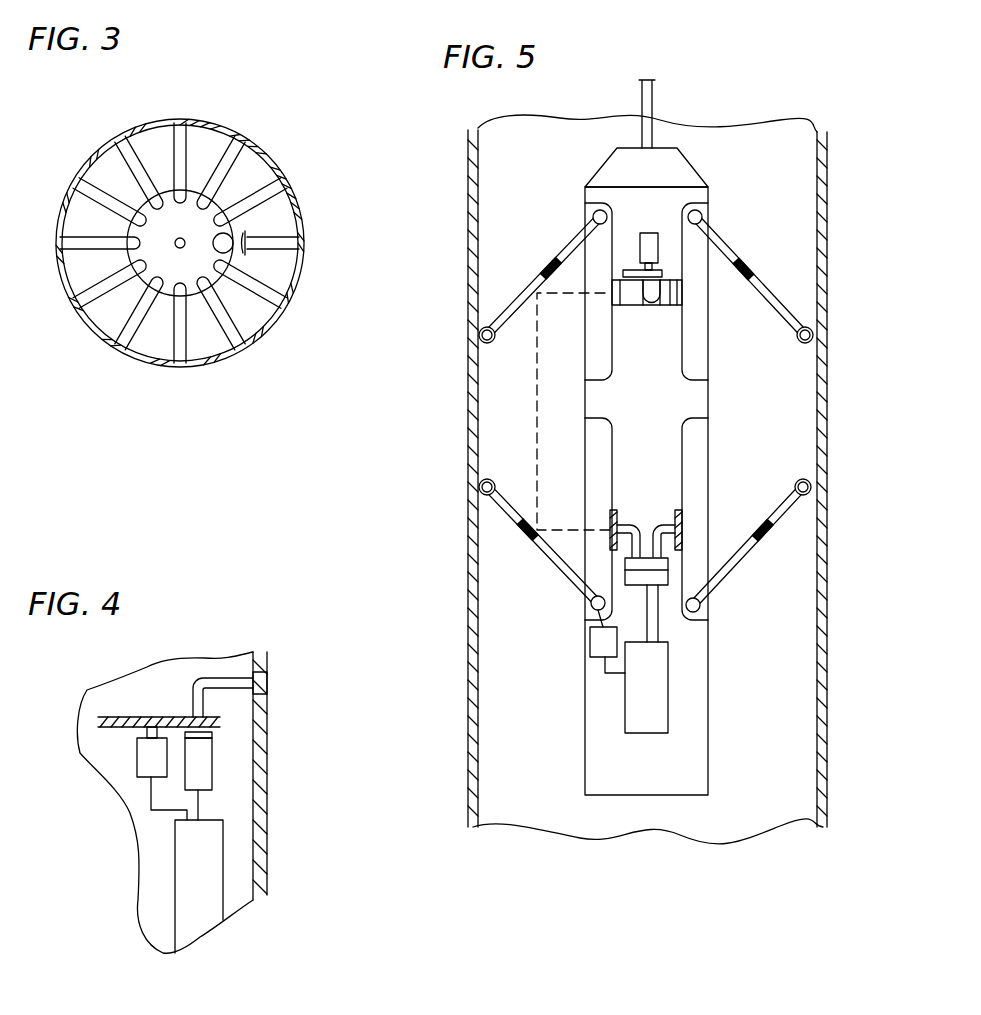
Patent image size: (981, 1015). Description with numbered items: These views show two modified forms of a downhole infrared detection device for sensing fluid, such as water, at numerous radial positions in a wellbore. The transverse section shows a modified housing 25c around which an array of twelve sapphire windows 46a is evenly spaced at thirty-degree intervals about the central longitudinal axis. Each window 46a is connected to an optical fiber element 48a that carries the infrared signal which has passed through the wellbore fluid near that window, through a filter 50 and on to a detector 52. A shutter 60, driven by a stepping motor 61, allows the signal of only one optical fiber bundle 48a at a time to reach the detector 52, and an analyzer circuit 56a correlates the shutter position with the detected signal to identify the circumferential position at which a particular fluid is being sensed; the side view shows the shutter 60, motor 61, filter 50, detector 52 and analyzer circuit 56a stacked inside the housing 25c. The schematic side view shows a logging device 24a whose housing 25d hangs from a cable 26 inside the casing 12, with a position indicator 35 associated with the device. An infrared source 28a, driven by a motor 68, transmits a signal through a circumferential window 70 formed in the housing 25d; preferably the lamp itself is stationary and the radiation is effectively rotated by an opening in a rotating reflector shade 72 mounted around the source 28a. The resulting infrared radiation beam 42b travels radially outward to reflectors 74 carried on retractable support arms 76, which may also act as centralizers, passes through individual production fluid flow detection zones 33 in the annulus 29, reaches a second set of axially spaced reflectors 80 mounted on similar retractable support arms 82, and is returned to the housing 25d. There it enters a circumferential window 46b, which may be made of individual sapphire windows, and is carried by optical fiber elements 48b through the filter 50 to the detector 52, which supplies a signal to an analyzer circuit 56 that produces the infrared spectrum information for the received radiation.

In FIG. 5, the casing 12 is at (823, 588).
In FIG. 5, the logging device 24a is at (706, 161).
In FIG. 3, the modified housing 25c is at (270, 153).
In FIG. 4, the modified housing 25c is at (267, 712).
In FIG. 5, the housing 25d is at (708, 218).
In FIG. 5, the wireline cable 26 is at (653, 108).
In FIG. 5, the infrared source 28a is at (643, 307).
In FIG. 5, the annulus 29 is at (538, 808).
In FIG. 5, the detection zones 33 is at (505, 418).
In FIG. 5, the position indicator 35 is at (597, 640).
In FIG. 5, the infrared radiation beam 42b is at (537, 370).
In FIG. 3, the sapphire windows 46a is at (180, 120).
In FIG. 4, the sapphire windows 46a is at (267, 680).
In FIG. 5, the circumferential window 46b is at (607, 513).
In FIG. 3, the optical fiber element 48a is at (173, 160).
In FIG. 4, the optical fiber element 48a is at (220, 680).
In FIG. 5, the optical fiber elements 48b is at (652, 530).
In FIG. 4, the filter 50 is at (212, 735).
In FIG. 5, the filter 50 is at (670, 565).
In FIG. 4, the detector 52 is at (212, 765).
In FIG. 5, the detector 52 is at (658, 590).
In FIG. 5, the analyzer circuit 56 is at (645, 733).
In FIG. 4, the analyzer circuit 56a is at (177, 902).
In FIG. 3, the shutter 60 is at (92, 328).
In FIG. 4, the shutter 60 is at (143, 715).
In FIG. 4, the stepping motor 61 is at (137, 758).
In FIG. 5, the motor 68 is at (650, 238).
In FIG. 5, the circumferential window 70 is at (683, 290).
In FIG. 5, the reflector shade 72 is at (690, 317).
In FIG. 5, the reflectors 74 is at (530, 303).
In FIG. 5, the support arms 76 is at (536, 300).
In FIG. 5, the second reflectors 80 is at (528, 520).
In FIG. 5, the support arms 82 is at (555, 565).